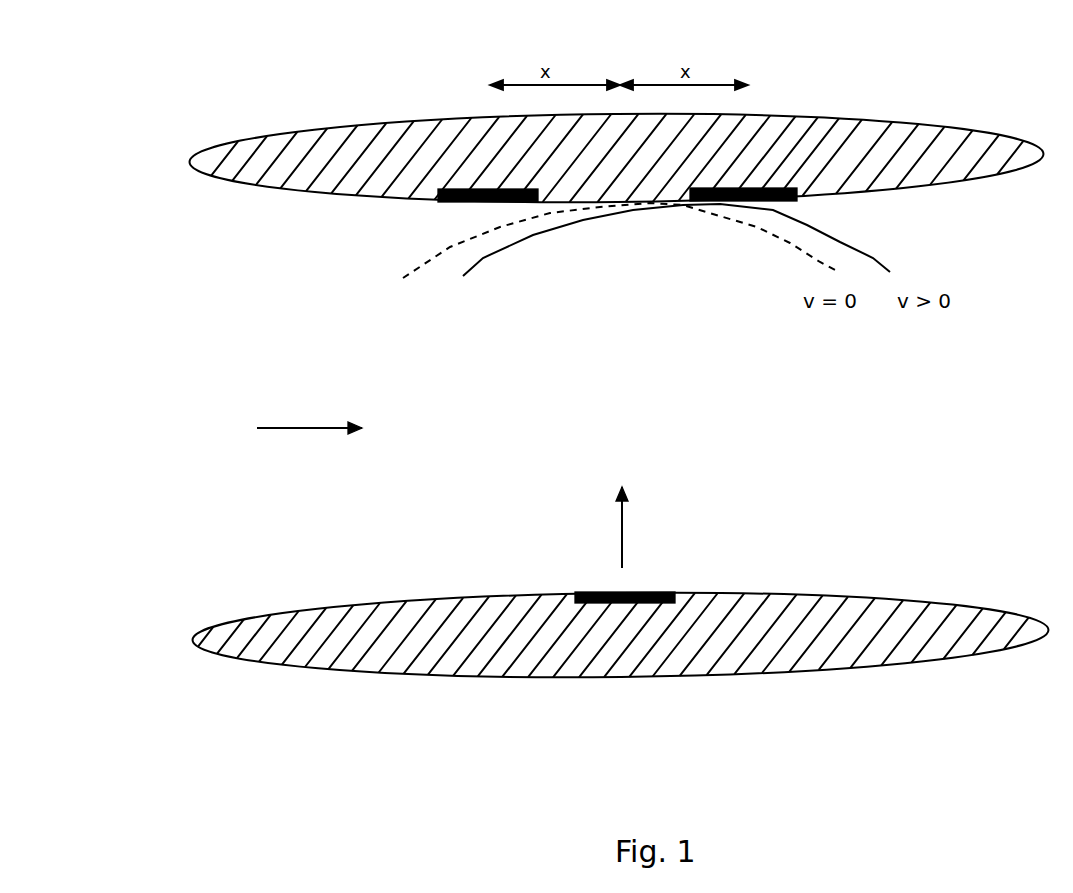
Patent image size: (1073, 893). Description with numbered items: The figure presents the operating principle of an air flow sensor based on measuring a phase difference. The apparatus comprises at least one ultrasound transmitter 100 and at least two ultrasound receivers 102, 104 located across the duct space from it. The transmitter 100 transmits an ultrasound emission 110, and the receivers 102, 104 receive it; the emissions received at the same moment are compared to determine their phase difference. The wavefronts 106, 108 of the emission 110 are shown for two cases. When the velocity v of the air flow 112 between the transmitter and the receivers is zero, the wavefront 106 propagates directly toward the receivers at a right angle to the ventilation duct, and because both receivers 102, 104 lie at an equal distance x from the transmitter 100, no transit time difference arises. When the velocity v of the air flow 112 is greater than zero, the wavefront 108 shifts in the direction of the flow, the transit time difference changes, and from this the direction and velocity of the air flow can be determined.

The ultrasound transmitter 100 is at (645, 600).
The ultrasound receiver 102 is at (482, 192).
The ultrasound receiver 104 is at (746, 189).
The wavefront 106 is at (443, 251).
The wavefront 108 is at (858, 250).
The ultrasound emission 110 is at (622, 533).
The air flow 112 is at (291, 426).